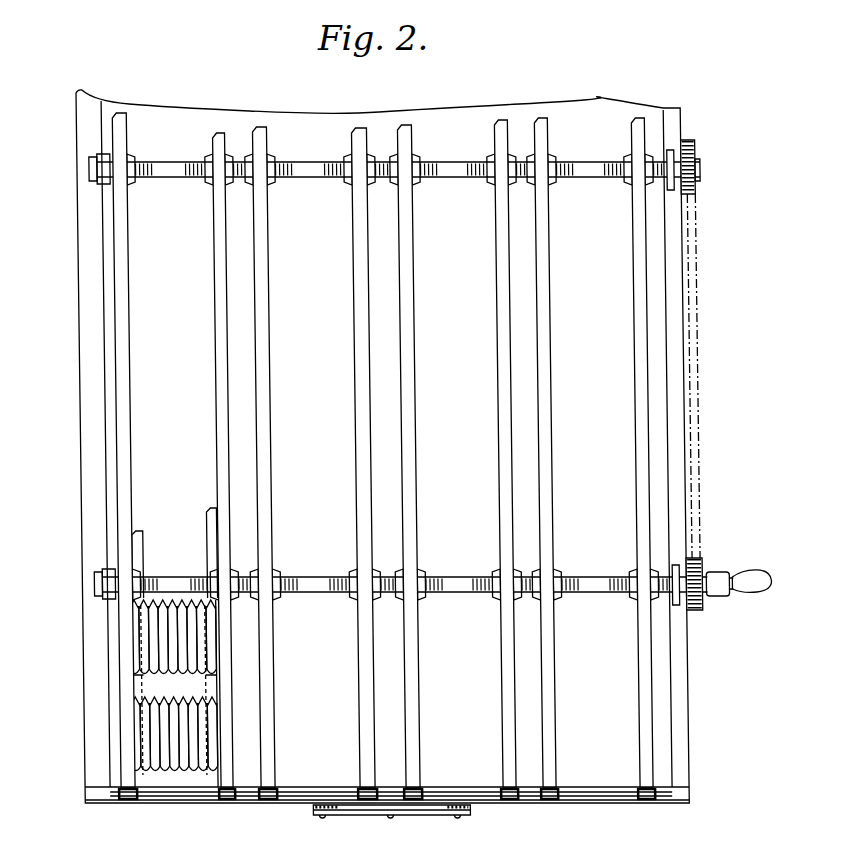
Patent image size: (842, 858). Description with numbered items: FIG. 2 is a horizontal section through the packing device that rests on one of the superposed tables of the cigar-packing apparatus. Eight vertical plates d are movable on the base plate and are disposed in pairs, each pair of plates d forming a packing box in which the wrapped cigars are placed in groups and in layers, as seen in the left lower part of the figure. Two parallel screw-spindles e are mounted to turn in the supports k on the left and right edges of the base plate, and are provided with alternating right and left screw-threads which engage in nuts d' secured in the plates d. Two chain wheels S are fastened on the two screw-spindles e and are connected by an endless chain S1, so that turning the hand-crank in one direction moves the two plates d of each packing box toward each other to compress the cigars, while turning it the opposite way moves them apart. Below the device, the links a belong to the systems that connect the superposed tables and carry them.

The vertical plates d is at (382, 450).
The nuts d' is at (393, 377).
The screw-spindles e is at (589, 607).
The supports k is at (695, 655).
The chain wheels S is at (703, 626).
The endless chain S1 is at (687, 457).
The links a is at (404, 814).